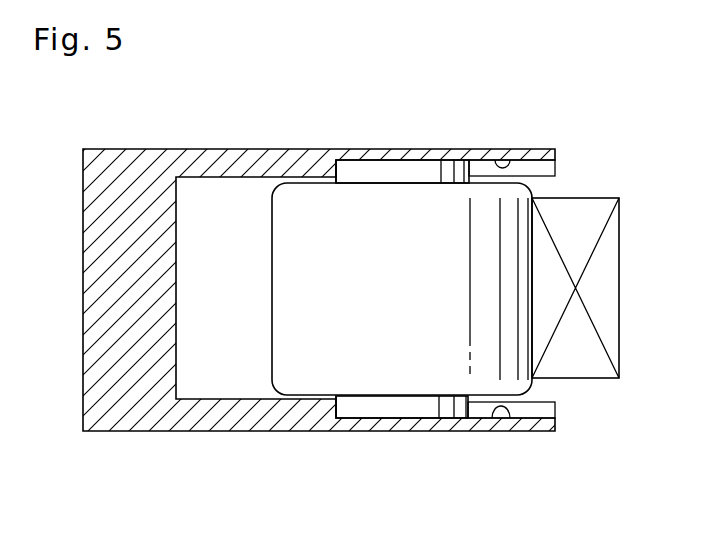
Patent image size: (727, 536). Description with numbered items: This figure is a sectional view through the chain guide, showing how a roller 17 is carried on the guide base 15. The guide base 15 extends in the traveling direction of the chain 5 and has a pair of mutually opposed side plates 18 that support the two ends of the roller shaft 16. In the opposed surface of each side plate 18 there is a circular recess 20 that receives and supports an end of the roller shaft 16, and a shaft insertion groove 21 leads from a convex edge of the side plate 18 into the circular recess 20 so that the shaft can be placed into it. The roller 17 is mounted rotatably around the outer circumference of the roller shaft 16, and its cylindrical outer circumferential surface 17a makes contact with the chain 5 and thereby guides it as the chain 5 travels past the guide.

The chain 5 is at (603, 275).
The guide base 15 is at (194, 149).
The roller shaft 16 is at (408, 174).
The roller 17 is at (512, 193).
The cylindrical outer circumferential surface 17a is at (533, 243).
The side plate 18 is at (556, 152).
The circular recess 20 is at (348, 172).
The shaft insertion groove 21 is at (511, 160).